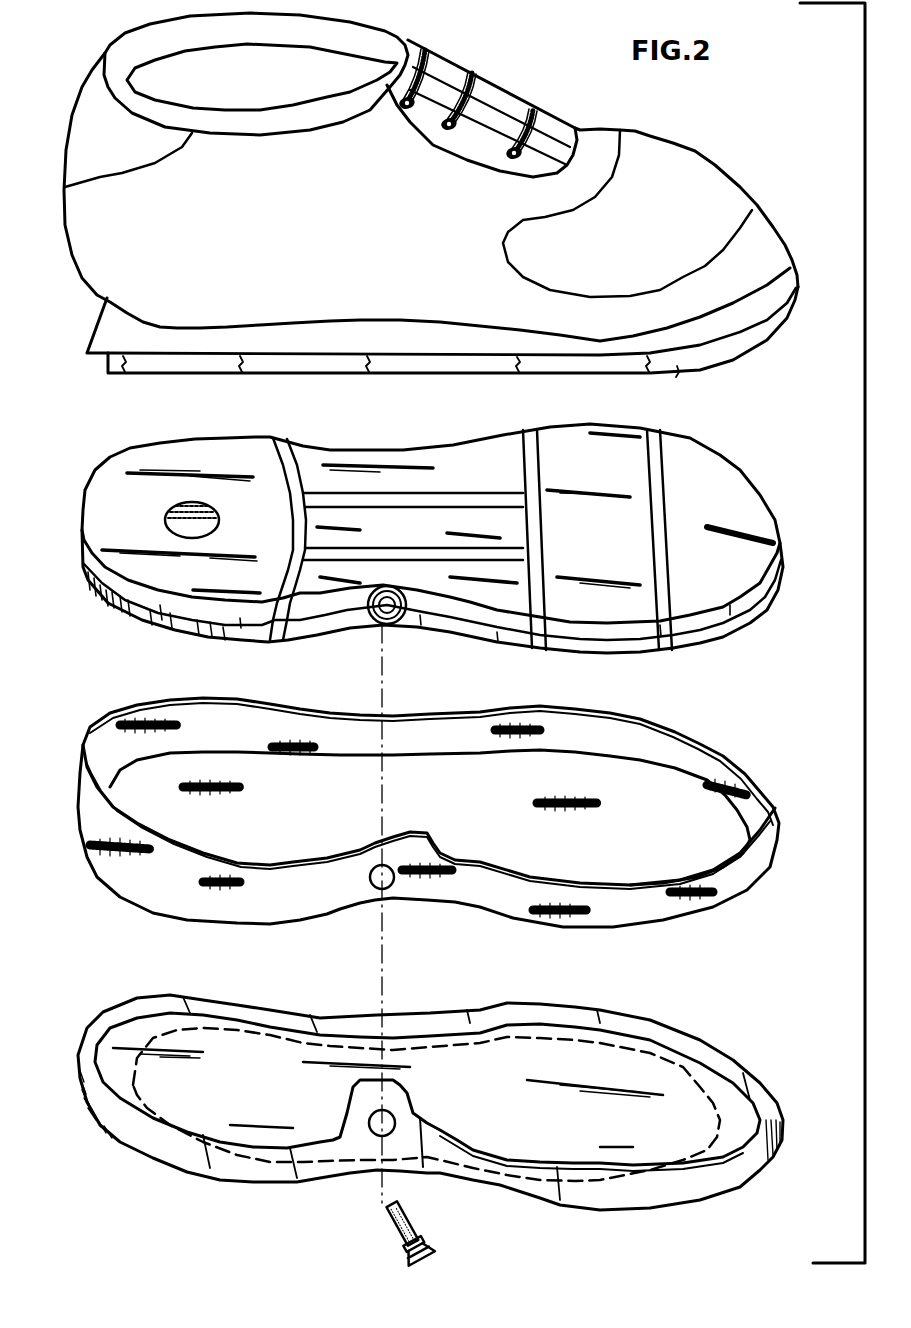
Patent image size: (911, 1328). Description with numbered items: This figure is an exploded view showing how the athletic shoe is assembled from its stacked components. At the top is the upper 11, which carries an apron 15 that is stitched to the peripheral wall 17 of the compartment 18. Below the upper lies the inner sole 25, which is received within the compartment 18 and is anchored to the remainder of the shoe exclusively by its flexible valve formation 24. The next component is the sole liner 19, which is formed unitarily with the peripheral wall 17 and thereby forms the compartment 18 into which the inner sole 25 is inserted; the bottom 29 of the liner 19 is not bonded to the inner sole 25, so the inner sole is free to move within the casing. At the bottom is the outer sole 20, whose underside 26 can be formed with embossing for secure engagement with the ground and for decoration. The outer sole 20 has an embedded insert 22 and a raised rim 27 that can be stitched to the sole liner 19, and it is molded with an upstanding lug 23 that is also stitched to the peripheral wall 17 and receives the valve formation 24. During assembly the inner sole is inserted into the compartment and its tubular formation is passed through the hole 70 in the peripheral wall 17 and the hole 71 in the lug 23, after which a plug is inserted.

The upper 11 is at (713, 167).
The apron 15 is at (767, 320).
The underside 26 is at (673, 365).
The inner sole 25 is at (750, 517).
The hole 70 is at (392, 880).
The peripheral wall 17 is at (727, 760).
The sole liner 19 is at (723, 850).
The bottom of the liner 29 is at (533, 860).
The compartment 18 is at (241, 1091).
The embedded insert 22 is at (697, 1090).
The upstanding lug 23 is at (407, 1087).
The raised rim 27 is at (767, 1090).
The outer sole 20 is at (730, 1173).
The hole 71 is at (372, 1130).
The valve formation 24 is at (392, 1222).